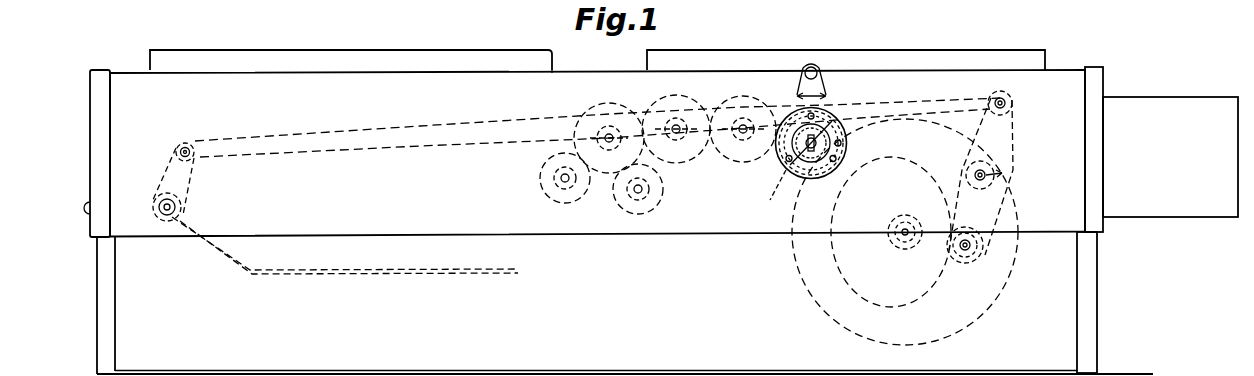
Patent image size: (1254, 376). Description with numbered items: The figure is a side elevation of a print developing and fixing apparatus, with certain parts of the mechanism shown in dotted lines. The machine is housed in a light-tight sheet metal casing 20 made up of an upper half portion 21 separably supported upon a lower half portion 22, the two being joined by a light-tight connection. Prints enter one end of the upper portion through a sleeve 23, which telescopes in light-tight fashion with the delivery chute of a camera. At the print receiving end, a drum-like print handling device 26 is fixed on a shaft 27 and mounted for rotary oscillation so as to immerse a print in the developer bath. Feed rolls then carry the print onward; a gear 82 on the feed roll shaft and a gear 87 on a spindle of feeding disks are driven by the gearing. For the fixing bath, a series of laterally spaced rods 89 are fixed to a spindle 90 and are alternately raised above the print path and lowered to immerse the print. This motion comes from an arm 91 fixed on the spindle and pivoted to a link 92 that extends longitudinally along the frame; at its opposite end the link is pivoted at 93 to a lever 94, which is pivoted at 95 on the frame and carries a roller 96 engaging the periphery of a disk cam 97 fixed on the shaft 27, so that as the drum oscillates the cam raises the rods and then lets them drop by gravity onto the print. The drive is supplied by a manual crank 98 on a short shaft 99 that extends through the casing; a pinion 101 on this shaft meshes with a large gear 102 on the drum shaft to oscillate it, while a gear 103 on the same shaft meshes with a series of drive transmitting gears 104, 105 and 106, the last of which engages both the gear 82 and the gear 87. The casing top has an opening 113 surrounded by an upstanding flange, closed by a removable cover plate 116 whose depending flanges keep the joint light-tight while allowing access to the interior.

The casing 20 is at (1056, 58).
The upper half portion 21 is at (1063, 71).
The lower half portion 22 is at (1067, 313).
The sleeve 23 is at (1147, 97).
The print handling device 26 is at (818, 262).
The shaft 27 is at (902, 247).
The gear 82 is at (667, 187).
The gear 87 is at (548, 197).
The rods 89 is at (386, 275).
The spindle 90 is at (185, 207).
The arm 91 is at (194, 171).
The link 92 is at (896, 106).
The pivot 93 is at (1013, 99).
The lever 94 is at (1014, 150).
The pivot 95 is at (1012, 172).
The roller 96 is at (967, 264).
The disk cam 97 is at (906, 307).
The crank 98 is at (828, 94).
The shaft 99 is at (790, 166).
The pinion 101 is at (796, 182).
The gear 102 is at (793, 250).
The gear 103 is at (848, 147).
The drive transmitting gear 104 is at (749, 98).
The drive transmitting gear 105 is at (699, 99).
The drive transmitting gear 106 is at (622, 108).
The opening 113 is at (520, 72).
The cover plate 116 is at (478, 51).